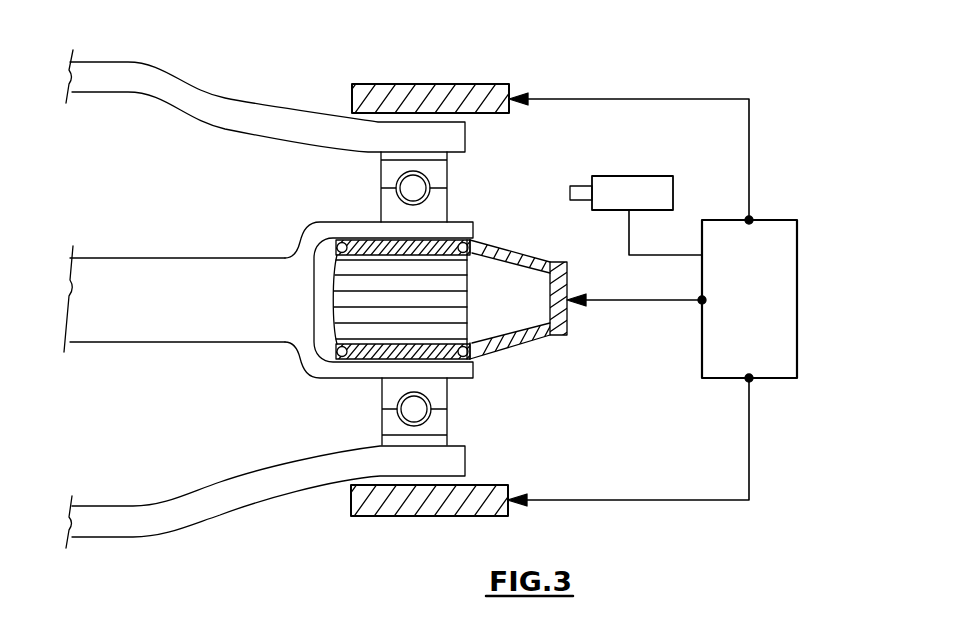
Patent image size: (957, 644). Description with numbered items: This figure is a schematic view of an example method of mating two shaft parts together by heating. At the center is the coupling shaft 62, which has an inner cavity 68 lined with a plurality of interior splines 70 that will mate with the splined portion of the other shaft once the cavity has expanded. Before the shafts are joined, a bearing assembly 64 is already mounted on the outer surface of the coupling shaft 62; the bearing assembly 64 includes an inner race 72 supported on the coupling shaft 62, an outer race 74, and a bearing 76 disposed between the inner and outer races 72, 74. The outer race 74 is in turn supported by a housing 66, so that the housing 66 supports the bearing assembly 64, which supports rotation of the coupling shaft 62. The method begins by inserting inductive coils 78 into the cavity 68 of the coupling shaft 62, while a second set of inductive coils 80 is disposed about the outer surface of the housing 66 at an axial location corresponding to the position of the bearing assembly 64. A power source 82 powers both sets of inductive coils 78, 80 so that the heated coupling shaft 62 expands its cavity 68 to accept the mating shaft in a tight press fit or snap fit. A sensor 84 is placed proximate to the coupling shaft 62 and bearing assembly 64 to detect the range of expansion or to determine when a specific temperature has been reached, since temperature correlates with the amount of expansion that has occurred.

The coupling shaft 62 is at (228, 325).
The bearing assembly 64 is at (347, 405).
The housing 66 is at (247, 497).
The inner cavity 68 is at (467, 316).
The interior splines 70 is at (457, 290).
The inner race 72 is at (388, 208).
The outer race 74 is at (437, 173).
The bearing 76 is at (408, 187).
The inductive coils 78 is at (455, 360).
The second set of inductive coils 80 is at (492, 97).
The power source 82 is at (794, 272).
The sensor 84 is at (632, 187).